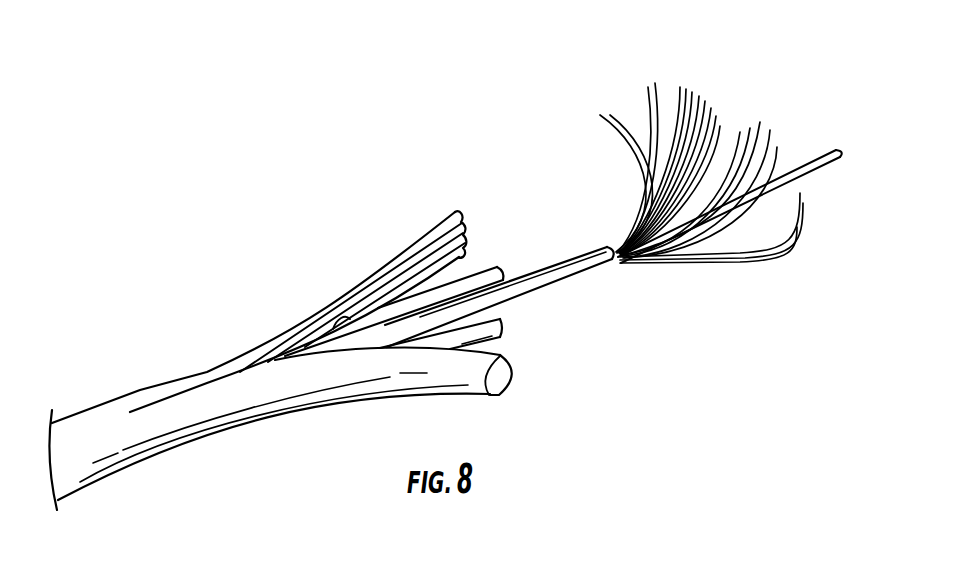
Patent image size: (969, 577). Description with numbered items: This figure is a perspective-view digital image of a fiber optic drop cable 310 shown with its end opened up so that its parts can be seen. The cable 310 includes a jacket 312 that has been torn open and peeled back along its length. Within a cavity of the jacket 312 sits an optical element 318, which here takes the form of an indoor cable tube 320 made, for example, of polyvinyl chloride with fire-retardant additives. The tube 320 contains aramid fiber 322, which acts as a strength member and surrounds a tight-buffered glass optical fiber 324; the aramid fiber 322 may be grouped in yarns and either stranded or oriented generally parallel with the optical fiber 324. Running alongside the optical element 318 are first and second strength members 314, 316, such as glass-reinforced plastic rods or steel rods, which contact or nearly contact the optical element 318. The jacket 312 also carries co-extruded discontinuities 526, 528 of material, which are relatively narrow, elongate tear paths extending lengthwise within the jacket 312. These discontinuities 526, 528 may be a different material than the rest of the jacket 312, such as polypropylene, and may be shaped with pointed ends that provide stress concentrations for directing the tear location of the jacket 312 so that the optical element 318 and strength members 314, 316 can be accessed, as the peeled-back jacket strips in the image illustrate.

The fiber optic drop cable 310 is at (222, 212).
The jacket 312 is at (207, 372).
The first strength member 314 is at (447, 294).
The second strength member 316 is at (503, 333).
The optical element 318 is at (557, 258).
The indoor cable tube 320 is at (542, 277).
The aramid fiber 322 is at (713, 120).
The optical fiber 324 is at (827, 150).
The co-extruded discontinuity 526 is at (370, 297).
The co-extruded discontinuity 528 is at (462, 257).